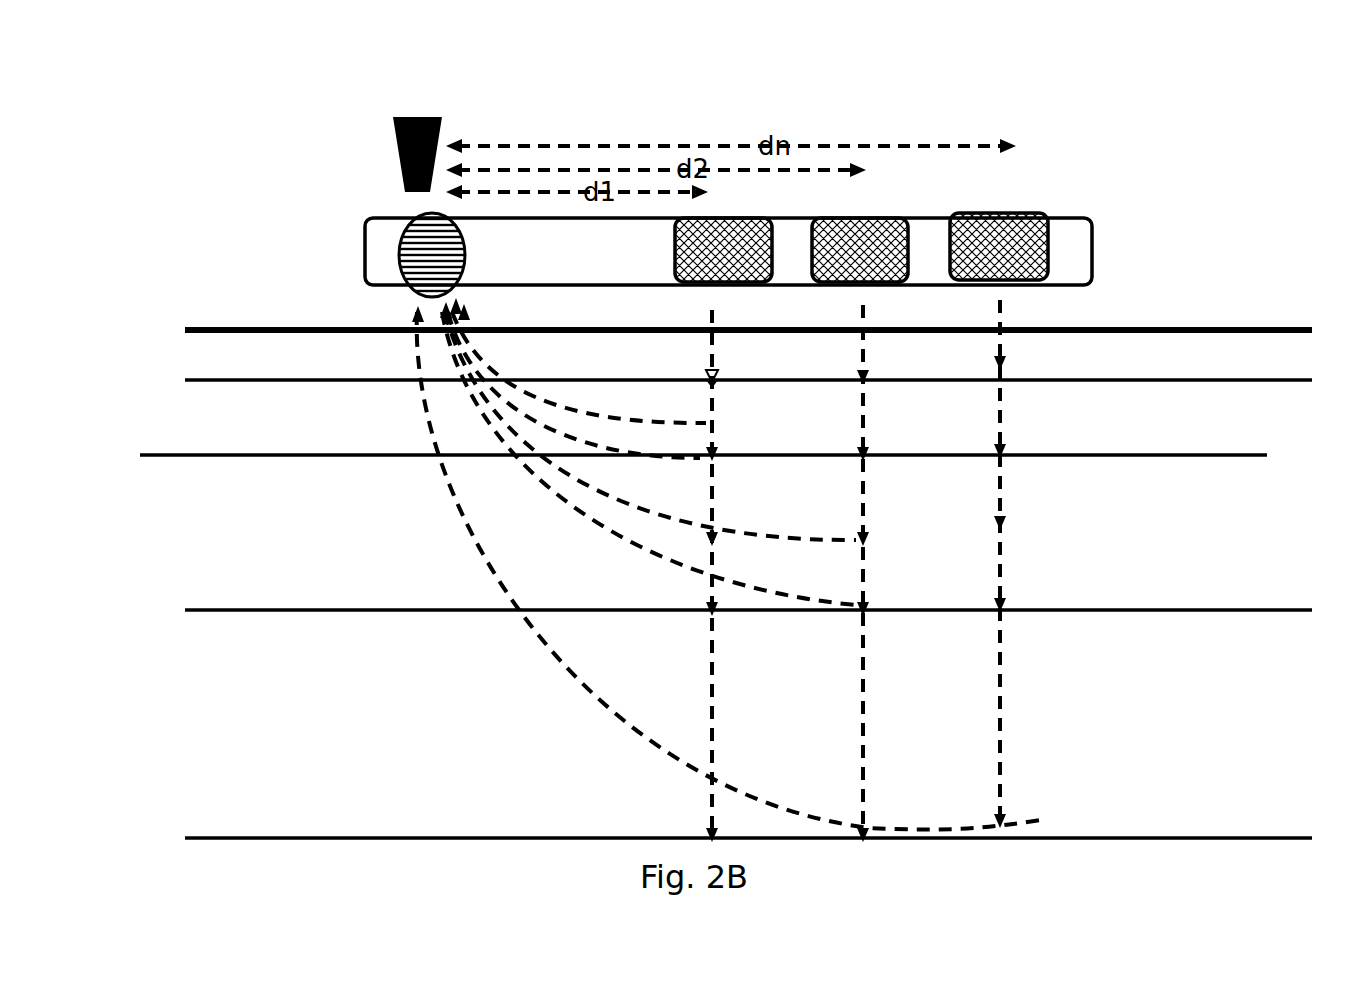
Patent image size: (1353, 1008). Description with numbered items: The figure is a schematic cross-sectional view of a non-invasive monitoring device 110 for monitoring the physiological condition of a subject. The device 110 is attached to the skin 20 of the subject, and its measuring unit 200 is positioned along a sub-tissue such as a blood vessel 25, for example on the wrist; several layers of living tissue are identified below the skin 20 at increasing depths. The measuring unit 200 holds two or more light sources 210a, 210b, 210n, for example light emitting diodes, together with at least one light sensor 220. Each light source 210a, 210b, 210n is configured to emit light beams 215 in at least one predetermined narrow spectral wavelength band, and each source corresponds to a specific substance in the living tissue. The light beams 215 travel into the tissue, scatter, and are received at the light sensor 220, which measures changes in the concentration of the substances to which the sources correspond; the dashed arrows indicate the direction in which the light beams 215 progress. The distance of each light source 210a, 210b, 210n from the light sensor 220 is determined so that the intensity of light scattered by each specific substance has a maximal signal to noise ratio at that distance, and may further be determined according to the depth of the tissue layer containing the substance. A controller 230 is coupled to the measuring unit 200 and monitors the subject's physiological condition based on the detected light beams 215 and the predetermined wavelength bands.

The skin 20 is at (314, 322).
The blood vessel 25 is at (1288, 538).
The non-invasive monitoring device 110 is at (1049, 138).
The measuring unit 200 is at (1055, 213).
The light source 210a is at (727, 212).
The light source 210b is at (857, 212).
The light source 210n is at (1048, 248).
The light beams 215 is at (712, 617).
The light sensor 220 is at (440, 208).
The controller 230 is at (410, 117).